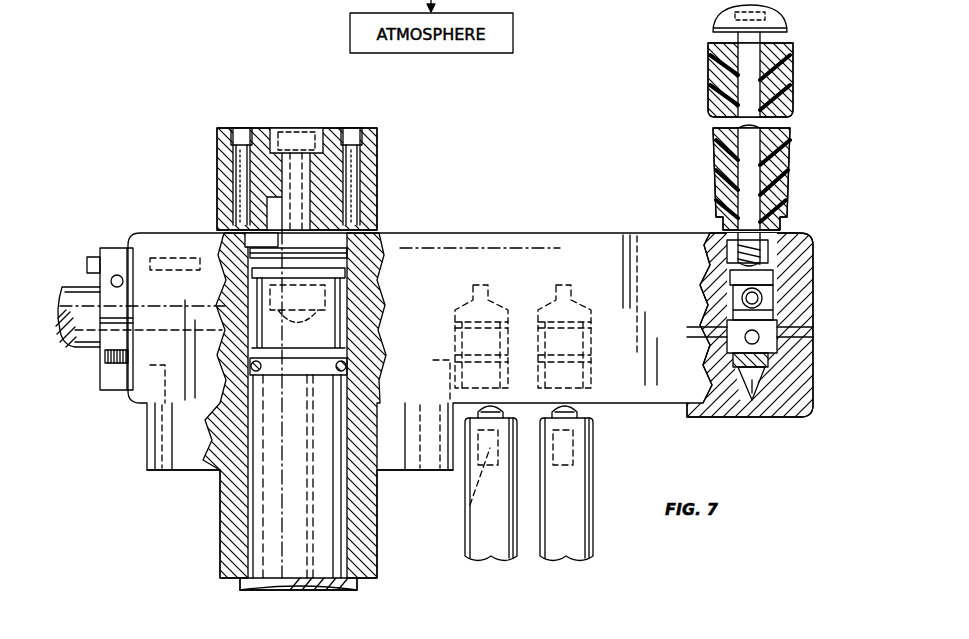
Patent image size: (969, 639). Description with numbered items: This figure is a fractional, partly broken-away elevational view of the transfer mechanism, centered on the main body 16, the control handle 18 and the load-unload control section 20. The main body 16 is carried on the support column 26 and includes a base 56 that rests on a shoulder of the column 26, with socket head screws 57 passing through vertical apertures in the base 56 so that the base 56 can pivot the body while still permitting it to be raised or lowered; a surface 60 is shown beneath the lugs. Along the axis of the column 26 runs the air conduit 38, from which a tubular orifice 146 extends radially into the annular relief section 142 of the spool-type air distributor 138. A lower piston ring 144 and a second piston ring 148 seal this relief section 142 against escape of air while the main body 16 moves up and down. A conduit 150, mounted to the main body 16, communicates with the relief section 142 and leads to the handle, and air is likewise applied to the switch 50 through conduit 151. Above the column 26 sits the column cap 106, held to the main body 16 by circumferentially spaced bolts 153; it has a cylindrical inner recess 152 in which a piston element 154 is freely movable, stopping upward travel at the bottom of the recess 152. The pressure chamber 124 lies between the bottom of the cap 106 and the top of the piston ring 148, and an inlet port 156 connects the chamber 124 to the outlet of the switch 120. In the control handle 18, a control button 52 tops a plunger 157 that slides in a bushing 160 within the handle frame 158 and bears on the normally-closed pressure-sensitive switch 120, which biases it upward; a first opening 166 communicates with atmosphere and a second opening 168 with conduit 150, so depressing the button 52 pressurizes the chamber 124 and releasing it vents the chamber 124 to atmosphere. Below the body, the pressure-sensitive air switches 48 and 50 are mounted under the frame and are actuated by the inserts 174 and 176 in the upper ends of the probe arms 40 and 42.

The main body 16 is at (500, 212).
The control handle 18 is at (799, 106).
The load-unload control section 20 is at (612, 478).
The column 26 is at (232, 547).
The air conduit 38 is at (287, 500).
The probe arm 40 is at (474, 540).
The probe arm 42 is at (593, 538).
The pressure-sensitive air switch 48 is at (497, 300).
The pressure-sensitive air switch 50 is at (578, 298).
The control button 52 is at (777, 20).
The base 56 is at (420, 462).
The socket head screws 57 is at (150, 450).
The mounting surface 60 is at (157, 472).
The column cap 106 is at (378, 168).
The normally-closed pressure-sensitive pneumatic switch 120 is at (793, 317).
The pressure chamber 124 is at (235, 225).
The spool-type air distributor 138 is at (243, 297).
The annular relief section 142 is at (352, 290).
The lower piston ring 144 is at (352, 370).
The tubular orifice 146 is at (262, 345).
The second piston ring 148 is at (352, 258).
The conduit 150 is at (352, 320).
The conduit 151 is at (358, 130).
The cylindrical inner recess 152 is at (268, 168).
The bolts 153 is at (245, 128).
The piston element 154 is at (280, 130).
The inlet port 156 is at (356, 216).
The plunger 157 is at (745, 83).
The handle frame 158 is at (782, 165).
The bushing 160 is at (787, 133).
The first opening 166 is at (813, 335).
The second opening 168 is at (770, 288).
The insert 174 is at (470, 508).
The insert 176 is at (573, 440).